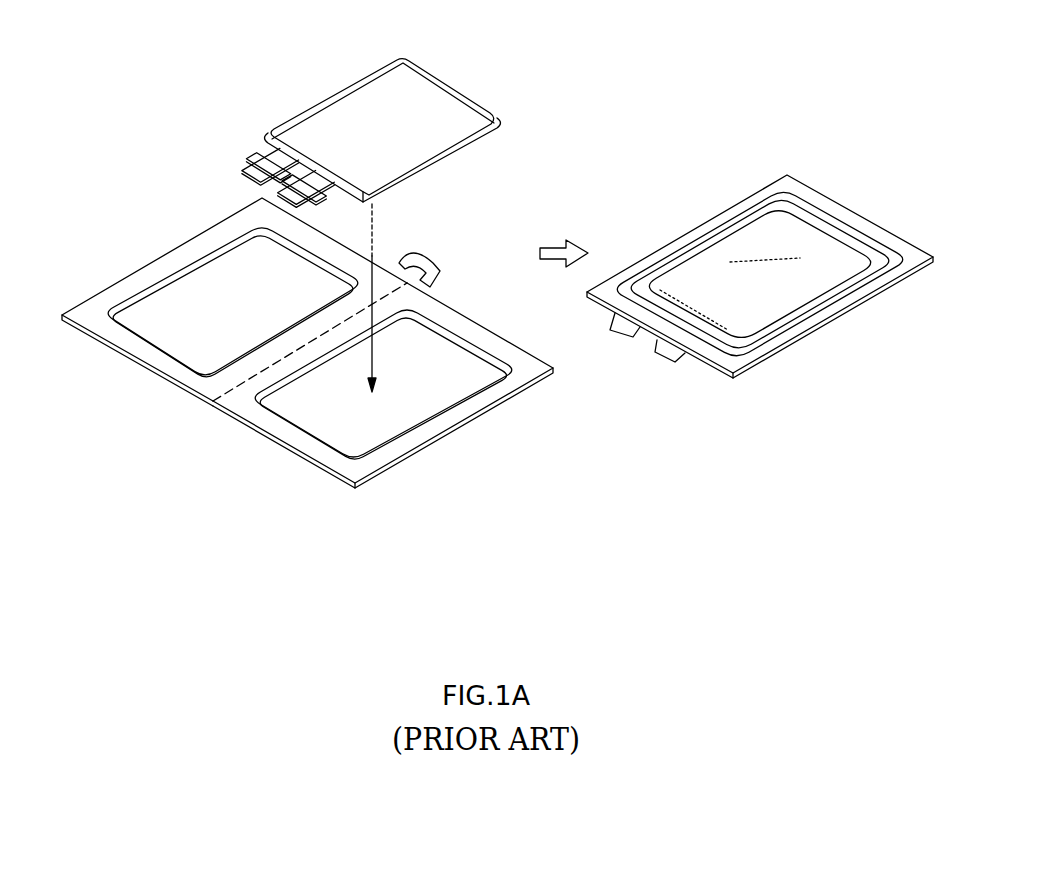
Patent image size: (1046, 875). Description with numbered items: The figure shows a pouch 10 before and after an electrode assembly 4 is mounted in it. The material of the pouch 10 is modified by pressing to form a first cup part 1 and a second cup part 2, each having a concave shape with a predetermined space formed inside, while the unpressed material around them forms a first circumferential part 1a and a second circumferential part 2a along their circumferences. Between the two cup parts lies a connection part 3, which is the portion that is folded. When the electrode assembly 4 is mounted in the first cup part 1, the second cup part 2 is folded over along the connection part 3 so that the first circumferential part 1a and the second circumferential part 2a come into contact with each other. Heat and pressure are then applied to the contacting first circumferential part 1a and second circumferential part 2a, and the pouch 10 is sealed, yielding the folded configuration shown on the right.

The first cup part 1 is at (403, 422).
The first circumferential part 1a is at (380, 463).
The second cup part 2 is at (237, 270).
The second circumferential part 2a is at (115, 337).
The connection part 3 is at (223, 393).
The electrode assembly 4 is at (420, 82).
The pouch 10 is at (457, 258).